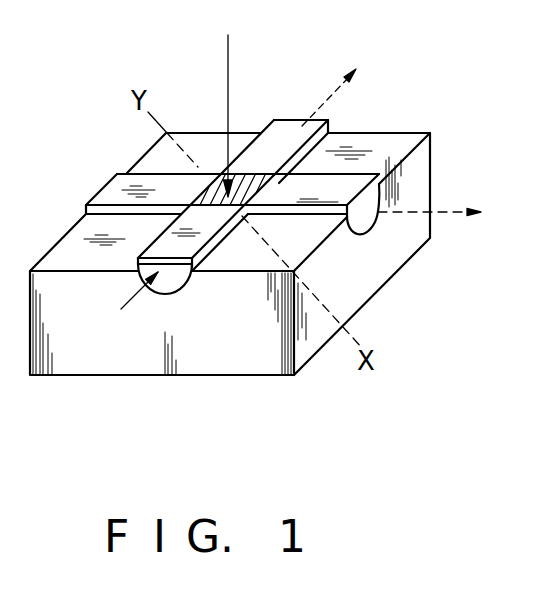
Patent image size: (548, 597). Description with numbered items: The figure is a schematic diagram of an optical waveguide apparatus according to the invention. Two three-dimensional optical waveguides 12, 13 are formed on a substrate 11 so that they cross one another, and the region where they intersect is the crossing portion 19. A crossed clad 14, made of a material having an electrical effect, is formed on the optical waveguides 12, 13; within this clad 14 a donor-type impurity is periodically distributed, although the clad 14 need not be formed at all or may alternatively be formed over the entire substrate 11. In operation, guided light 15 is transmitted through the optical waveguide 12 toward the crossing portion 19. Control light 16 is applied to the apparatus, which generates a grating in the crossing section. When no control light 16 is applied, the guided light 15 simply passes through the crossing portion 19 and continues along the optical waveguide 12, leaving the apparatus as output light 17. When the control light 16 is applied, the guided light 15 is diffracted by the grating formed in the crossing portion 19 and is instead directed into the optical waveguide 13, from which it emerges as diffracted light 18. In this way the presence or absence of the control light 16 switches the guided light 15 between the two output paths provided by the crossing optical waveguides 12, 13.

The substrate 11 is at (247, 369).
The optical waveguide 12 is at (178, 281).
The optical waveguide 13 is at (362, 217).
The crossed clad 14 is at (268, 126).
The guided light 15 is at (131, 300).
The control light 16 is at (229, 58).
The output light 17 is at (330, 97).
The diffracted light 18 is at (455, 218).
The crossing portion 19 is at (247, 185).